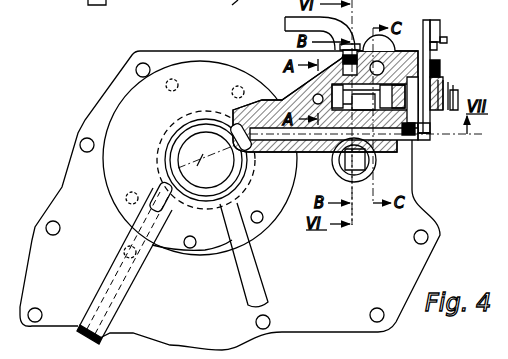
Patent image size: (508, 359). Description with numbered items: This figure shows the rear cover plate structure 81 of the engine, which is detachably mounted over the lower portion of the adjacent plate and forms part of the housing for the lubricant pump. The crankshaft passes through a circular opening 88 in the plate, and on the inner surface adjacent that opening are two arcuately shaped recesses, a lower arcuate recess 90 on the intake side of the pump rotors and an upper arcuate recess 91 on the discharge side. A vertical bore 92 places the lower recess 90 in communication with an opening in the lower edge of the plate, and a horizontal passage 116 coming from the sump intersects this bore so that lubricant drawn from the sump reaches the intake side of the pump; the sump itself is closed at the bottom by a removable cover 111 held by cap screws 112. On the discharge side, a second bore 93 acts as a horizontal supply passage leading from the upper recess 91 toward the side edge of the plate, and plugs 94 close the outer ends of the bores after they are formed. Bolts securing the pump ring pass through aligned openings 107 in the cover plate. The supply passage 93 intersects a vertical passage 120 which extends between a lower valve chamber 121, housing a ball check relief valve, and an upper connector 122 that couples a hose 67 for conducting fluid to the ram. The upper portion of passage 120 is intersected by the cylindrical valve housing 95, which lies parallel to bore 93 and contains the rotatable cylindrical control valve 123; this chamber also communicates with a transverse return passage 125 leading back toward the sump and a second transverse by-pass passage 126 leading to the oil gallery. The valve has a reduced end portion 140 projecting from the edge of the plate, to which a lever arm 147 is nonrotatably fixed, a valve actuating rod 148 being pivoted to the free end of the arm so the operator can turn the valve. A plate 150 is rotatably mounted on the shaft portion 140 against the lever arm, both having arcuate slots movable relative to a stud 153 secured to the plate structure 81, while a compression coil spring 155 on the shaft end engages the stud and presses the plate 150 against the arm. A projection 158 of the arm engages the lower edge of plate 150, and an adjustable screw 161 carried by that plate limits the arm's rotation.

The hose 67 is at (286, 22).
The plate structure 81 is at (419, 274).
The circular opening 88 is at (178, 166).
The arcuate recess 90 is at (246, 195).
The arcuate recess 91 is at (238, 112).
The bore 92 is at (118, 287).
The second bore 93 is at (255, 154).
The plugs 94 is at (80, 332).
The cylindrical valve housing 95 is at (392, 63).
The openings 107 is at (168, 90).
The removable cover 111 is at (229, 7).
The cap screws 112 is at (148, 3).
The horizontal passage 116 is at (134, 257).
The vertical passage 120 is at (334, 154).
The valve chamber 121 is at (334, 168).
The connector 122 is at (353, 27).
The cylindrical valve 123 is at (305, 88).
The transverse passage 125 is at (313, 100).
The second transverse passage 126 is at (379, 148).
The reduced end portion 140 is at (458, 96).
The lever arm 147 is at (426, 19).
The valve actuating rod 148 is at (440, 24).
The plate 150 is at (432, 132).
The stud 153 is at (442, 75).
The compression coil spring 155 is at (454, 86).
The projection 158 is at (426, 135).
The screw 161 is at (447, 40).